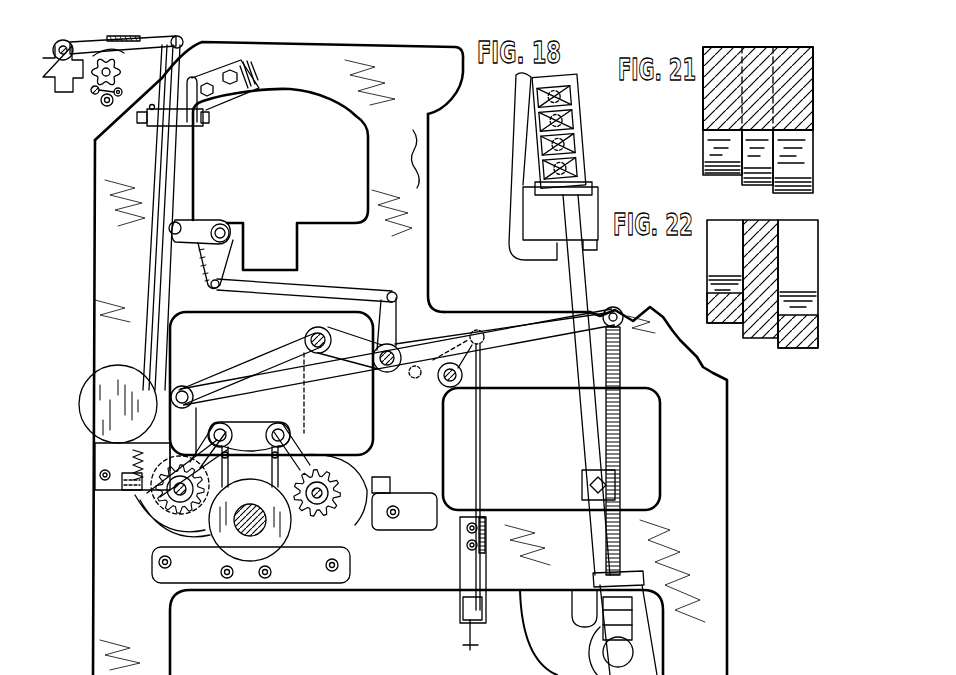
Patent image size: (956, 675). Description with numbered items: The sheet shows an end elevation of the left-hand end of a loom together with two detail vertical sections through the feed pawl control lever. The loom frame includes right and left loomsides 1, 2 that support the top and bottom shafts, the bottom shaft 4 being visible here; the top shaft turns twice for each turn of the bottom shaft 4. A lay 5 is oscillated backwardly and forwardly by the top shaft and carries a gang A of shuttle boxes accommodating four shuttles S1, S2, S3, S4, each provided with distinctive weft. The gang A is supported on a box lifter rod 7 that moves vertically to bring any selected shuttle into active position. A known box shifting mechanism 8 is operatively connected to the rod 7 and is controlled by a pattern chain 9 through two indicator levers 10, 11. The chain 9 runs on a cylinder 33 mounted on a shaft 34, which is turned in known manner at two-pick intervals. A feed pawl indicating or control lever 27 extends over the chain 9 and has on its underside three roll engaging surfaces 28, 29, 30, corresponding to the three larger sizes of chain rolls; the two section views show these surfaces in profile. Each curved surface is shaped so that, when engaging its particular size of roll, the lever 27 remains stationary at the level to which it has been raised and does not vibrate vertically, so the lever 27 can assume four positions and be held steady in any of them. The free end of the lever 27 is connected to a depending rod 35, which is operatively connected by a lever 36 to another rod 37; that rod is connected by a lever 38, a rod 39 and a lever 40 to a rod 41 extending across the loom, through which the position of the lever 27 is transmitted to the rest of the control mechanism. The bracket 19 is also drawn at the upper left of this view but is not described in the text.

In FIG. 18, the right loomside 1 is at (426, 151).
In FIG. 18, the left loomside 2 is at (417, 207).
In FIG. 18, the bottom shaft 4 is at (250, 538).
In FIG. 18, the lay 5 is at (546, 224).
In FIG. 18, the box lifter rod 7 is at (574, 281).
In FIG. 18, the box shifting mechanism 8 is at (247, 435).
In FIG. 18, the pattern chain 9 is at (122, 89).
In FIG. 18, the indicator lever 10 is at (136, 41).
In FIG. 18, the indicator lever 11 is at (111, 39).
In FIG. 18, the bracket 19 is at (107, 31).
In FIG. 18, the feed pawl control lever 27 is at (181, 40).
In FIG. 21, the feed pawl control lever 27 is at (793, 103).
In FIG. 22, the feed pawl control lever 27 is at (805, 275).
In FIG. 21, the roll engaging surface 28 is at (723, 181).
In FIG. 22, the roll engaging surface 28 is at (736, 333).
In FIG. 21, the roll engaging surface 29 is at (757, 192).
In FIG. 22, the roll engaging surface 29 is at (766, 345).
In FIG. 21, the roll engaging surface 30 is at (802, 197).
In FIG. 22, the roll engaging surface 30 is at (807, 354).
In FIG. 18, the cylinder 33 is at (105, 88).
In FIG. 18, the shaft 34 is at (103, 78).
In FIG. 18, the depending rod 35 is at (177, 181).
In FIG. 18, the lever 36 is at (200, 228).
In FIG. 18, the rod 37 is at (335, 292).
In FIG. 18, the lever 38 is at (397, 310).
In FIG. 18, the rod 39 is at (479, 438).
In FIG. 18, the lever 40 is at (466, 628).
In FIG. 18, the rod 41 is at (474, 644).
In FIG. 18, the shuttle S1 is at (540, 96).
In FIG. 18, the shuttle S2 is at (541, 119).
In FIG. 18, the shuttle S3 is at (547, 147).
In FIG. 18, the shuttle S4 is at (548, 171).
In FIG. 18, the gang of shuttle boxes A is at (543, 133).